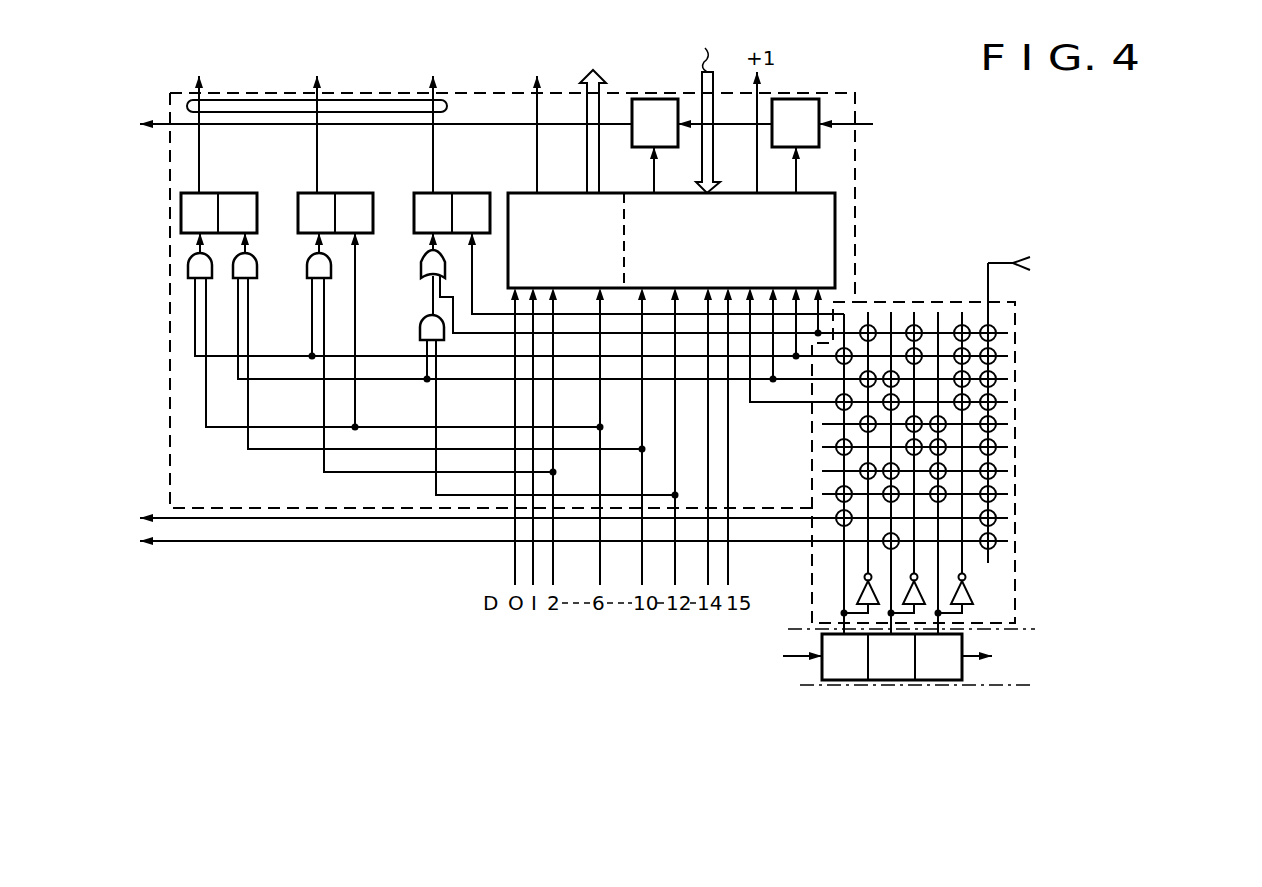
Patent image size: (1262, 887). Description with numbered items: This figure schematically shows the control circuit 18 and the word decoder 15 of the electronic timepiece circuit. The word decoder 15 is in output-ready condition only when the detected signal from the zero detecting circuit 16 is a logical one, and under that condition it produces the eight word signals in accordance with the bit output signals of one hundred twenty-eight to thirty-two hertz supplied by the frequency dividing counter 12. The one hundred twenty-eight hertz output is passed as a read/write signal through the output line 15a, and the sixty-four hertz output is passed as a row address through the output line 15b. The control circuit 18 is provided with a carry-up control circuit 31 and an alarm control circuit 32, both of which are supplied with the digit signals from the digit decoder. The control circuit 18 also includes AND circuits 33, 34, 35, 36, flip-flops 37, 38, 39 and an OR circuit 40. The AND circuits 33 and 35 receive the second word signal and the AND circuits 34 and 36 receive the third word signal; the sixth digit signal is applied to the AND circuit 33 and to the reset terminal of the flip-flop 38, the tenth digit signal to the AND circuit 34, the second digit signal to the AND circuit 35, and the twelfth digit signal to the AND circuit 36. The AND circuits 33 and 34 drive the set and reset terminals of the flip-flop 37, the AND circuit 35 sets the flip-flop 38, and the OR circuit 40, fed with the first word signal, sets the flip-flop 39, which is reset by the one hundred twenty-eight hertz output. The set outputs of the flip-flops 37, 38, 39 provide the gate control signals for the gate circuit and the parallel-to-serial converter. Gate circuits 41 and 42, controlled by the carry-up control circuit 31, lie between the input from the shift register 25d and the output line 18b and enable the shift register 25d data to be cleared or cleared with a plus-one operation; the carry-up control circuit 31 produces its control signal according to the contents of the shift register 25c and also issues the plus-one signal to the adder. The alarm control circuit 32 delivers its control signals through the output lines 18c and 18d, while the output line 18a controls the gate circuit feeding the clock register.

The control circuit 18 is at (168, 378).
The output line 18a is at (447, 106).
The output line 18b is at (143, 124).
The output line 18c is at (534, 119).
The output line 18d is at (599, 119).
The flip-flop 37 is at (229, 193).
The flip-flop 38 is at (338, 193).
The flip-flop 39 is at (456, 193).
The AND circuit 33 is at (188, 275).
The AND circuit 34 is at (258, 270).
The AND circuit 35 is at (315, 261).
The AND circuit 36 is at (421, 330).
The OR circuit 40 is at (424, 266).
The alarm control circuit 32 is at (550, 193).
The carry-up control circuit 31 is at (810, 193).
The gate circuit 42 is at (642, 99).
The gate circuit 41 is at (806, 99).
The word decoder 15 is at (1020, 562).
The output line 15a is at (165, 518).
The output line 15b is at (186, 541).
The zero detecting circuit 16 is at (1114, 263).
The frequency dividing counter 12 is at (800, 690).
The shift register 25c is at (808, 108).
The shift register 25d is at (964, 123).